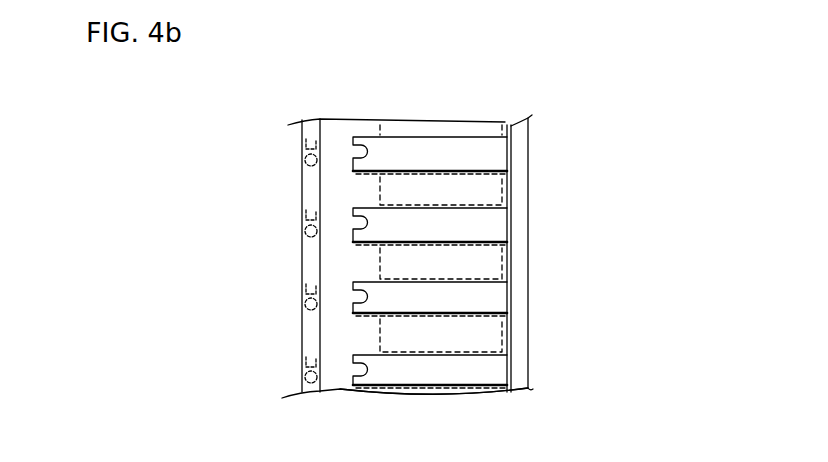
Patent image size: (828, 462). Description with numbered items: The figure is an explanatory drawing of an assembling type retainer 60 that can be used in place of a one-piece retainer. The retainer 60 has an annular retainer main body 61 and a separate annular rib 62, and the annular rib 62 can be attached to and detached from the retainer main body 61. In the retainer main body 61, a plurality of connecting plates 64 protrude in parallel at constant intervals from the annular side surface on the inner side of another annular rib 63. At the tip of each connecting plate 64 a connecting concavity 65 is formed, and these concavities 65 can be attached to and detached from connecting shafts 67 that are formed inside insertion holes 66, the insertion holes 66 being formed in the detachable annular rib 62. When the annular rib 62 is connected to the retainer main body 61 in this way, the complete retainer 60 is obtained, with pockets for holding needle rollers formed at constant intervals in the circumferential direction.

The retainer 60 is at (475, 93).
The retainer main body 61 is at (478, 385).
The annular rib 62 is at (307, 394).
The annular rib 63 is at (527, 258).
The connecting plate 64 is at (445, 218).
The connecting concavity 65 is at (373, 200).
The insertion hole 66 is at (303, 360).
The connecting shaft 67 is at (302, 377).